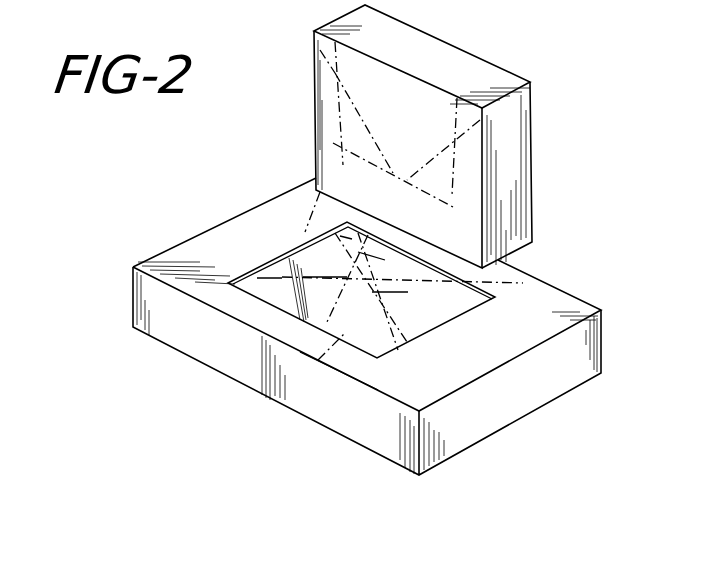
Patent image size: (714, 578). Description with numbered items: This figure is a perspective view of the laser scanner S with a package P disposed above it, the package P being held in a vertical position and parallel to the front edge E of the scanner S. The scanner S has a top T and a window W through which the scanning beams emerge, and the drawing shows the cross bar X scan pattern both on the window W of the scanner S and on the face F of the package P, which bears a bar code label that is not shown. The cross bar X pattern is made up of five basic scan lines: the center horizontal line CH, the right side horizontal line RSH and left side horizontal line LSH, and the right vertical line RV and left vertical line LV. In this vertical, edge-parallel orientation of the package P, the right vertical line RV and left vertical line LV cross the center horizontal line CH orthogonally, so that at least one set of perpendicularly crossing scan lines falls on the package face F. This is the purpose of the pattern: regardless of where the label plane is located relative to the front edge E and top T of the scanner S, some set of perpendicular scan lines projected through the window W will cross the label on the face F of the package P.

The package P is at (535, 133).
The scanner S is at (595, 306).
The window W is at (262, 278).
The face F is at (330, 158).
The left side horizontal line LSH is at (335, 73).
The right side horizontal line RSH is at (483, 160).
The right vertical line RV is at (461, 108).
The left vertical line LV is at (318, 205).
The center horizontal line CH is at (523, 283).
The front edge E is at (378, 390).
The top T is at (498, 345).